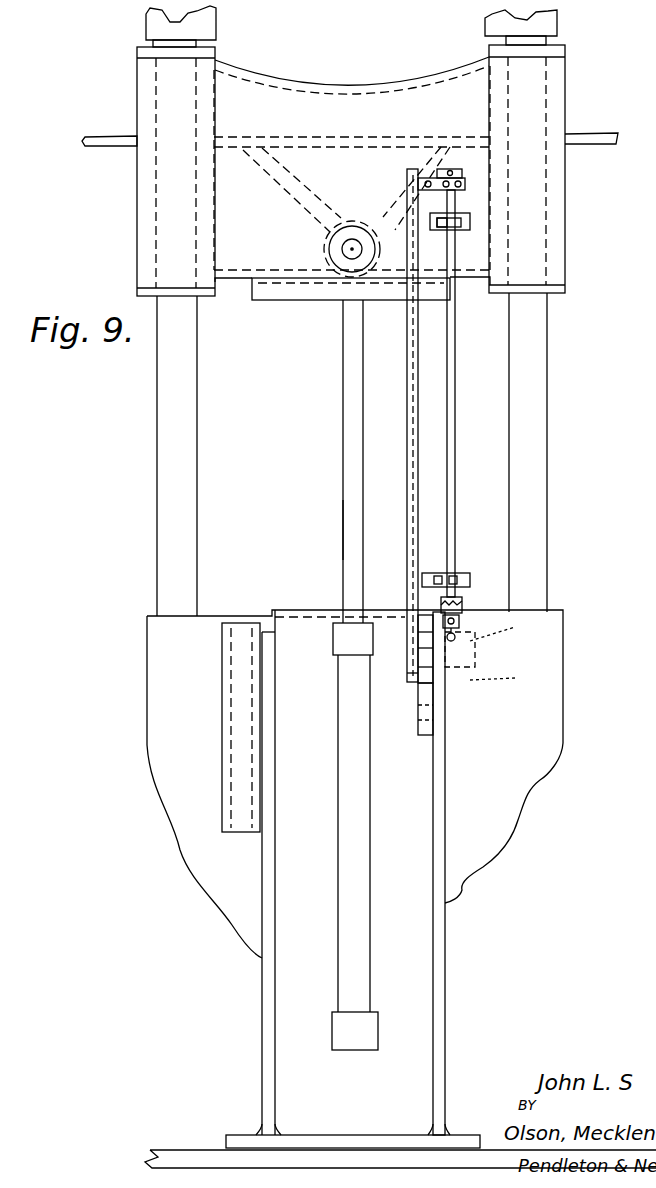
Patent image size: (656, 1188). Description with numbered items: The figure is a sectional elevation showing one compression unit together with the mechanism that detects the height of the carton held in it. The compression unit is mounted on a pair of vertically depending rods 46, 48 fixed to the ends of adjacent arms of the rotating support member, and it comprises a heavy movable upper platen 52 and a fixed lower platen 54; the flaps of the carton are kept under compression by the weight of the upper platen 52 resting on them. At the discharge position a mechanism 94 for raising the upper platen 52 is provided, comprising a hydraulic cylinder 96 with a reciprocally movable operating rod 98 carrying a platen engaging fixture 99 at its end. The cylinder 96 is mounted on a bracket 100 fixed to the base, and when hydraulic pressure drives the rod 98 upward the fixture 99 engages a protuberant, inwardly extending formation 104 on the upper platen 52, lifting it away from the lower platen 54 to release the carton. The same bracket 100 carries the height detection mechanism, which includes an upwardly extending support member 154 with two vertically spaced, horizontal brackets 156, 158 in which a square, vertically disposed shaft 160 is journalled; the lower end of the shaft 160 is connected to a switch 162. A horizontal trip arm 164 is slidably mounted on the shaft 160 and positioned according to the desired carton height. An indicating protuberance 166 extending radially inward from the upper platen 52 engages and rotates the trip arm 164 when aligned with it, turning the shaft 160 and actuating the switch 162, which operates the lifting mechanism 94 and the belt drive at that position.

The rod 46 is at (198, 512).
The rod 48 is at (549, 470).
The upper platen 52 is at (567, 238).
The lower platen 54 is at (556, 656).
The mechanism 94 is at (332, 530).
The hydraulic cylinder 96 is at (371, 822).
The operating rod 98 is at (348, 437).
The platen engaging fixture 99 is at (286, 302).
The bracket 100 is at (447, 992).
The protuberant formation 104 is at (352, 240).
The support member 154 is at (410, 488).
The bracket 156 is at (432, 175).
The bracket 158 is at (470, 573).
The square shaft 160 is at (453, 440).
The switch 162 is at (476, 652).
The trip arm 164 is at (444, 232).
The indicating protuberance 166 is at (434, 222).